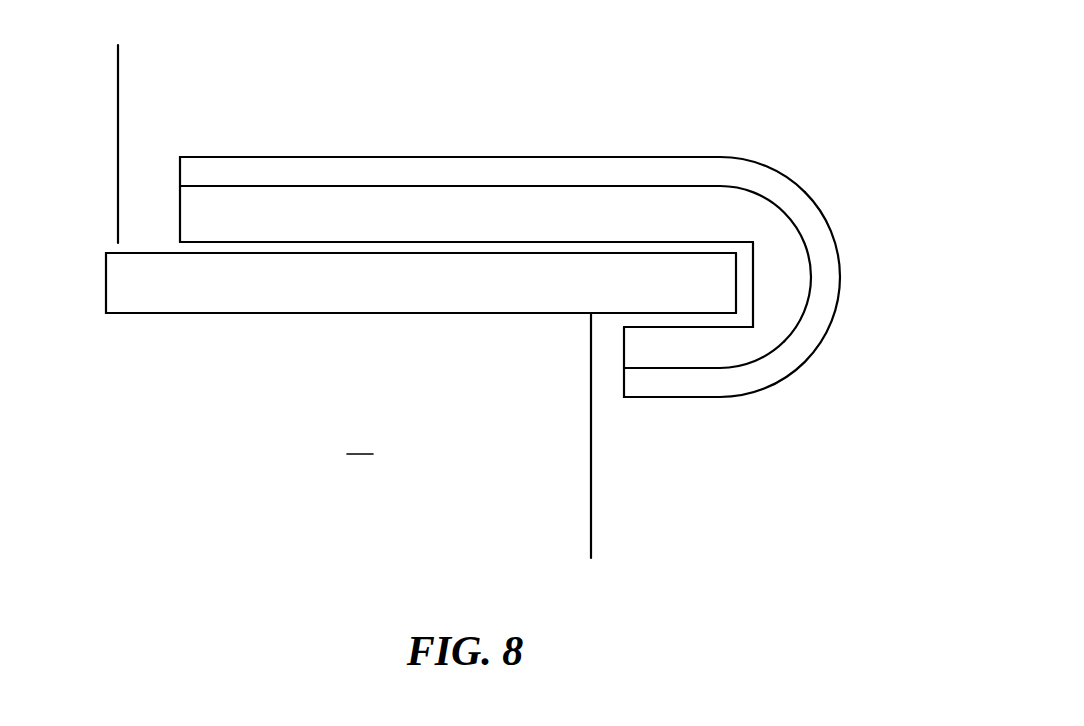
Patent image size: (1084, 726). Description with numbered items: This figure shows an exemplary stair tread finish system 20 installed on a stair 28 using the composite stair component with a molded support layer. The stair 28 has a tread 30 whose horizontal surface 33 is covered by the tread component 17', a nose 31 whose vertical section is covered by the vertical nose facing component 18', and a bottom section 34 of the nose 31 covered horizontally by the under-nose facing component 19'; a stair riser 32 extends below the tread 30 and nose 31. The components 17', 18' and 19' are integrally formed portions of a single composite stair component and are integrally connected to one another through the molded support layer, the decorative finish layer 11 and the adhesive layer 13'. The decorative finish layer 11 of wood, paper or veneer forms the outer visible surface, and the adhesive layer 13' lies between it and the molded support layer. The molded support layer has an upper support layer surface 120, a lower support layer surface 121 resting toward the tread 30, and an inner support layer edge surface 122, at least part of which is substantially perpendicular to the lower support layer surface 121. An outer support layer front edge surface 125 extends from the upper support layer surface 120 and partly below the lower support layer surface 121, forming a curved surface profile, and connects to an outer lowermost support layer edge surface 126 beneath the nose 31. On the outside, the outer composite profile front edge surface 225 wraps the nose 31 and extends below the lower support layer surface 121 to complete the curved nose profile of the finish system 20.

The decorative finish layer 11 is at (354, 166).
The upper support layer surface 120 is at (567, 185).
The lower support layer surface 121 is at (412, 242).
The inner support layer edge surface 122 is at (753, 273).
The tread component 17' is at (754, 125).
The stair tread finish system 20 is at (818, 203).
The outer composite profile front edge surface 225 is at (820, 347).
The adhesive layer 13' is at (804, 205).
The vertical nose facing component 18' is at (862, 309).
The outer support layer front edge surface 125 is at (805, 314).
The outer lowermost support layer edge surface 126 is at (650, 367).
The under-nose facing component 19' is at (689, 400).
The tread 30 is at (271, 291).
The nose 31 is at (707, 281).
The bottom section of the nose 34 is at (690, 314).
The stair riser 32 is at (113, 95).
The horizontal surface of the tread 33 is at (141, 246).
The stair 28 is at (360, 442).